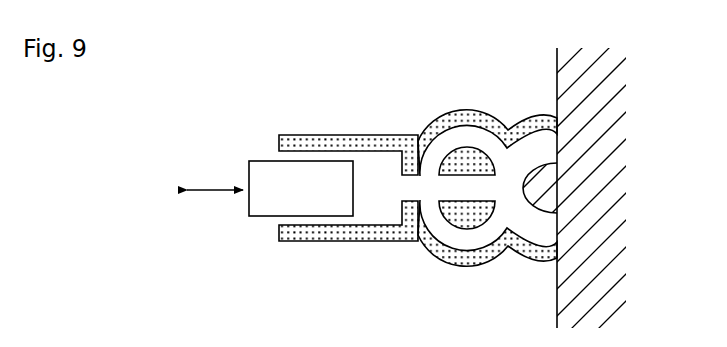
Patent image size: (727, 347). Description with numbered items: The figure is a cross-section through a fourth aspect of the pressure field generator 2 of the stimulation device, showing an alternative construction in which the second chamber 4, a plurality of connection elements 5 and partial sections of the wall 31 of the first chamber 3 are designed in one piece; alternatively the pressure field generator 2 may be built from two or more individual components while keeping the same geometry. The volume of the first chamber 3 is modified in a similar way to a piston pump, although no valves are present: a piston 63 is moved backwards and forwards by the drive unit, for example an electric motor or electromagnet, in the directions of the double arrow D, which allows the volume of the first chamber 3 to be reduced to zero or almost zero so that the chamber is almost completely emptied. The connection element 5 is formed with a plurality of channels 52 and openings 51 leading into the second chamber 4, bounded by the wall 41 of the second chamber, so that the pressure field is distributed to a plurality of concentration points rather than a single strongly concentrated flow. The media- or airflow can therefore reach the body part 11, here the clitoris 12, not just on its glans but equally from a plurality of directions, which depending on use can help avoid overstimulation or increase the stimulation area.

The pressure field generator 2 is at (237, 247).
The first chamber 3 is at (378, 188).
The wall of first chamber 31 is at (297, 145).
The piston 63 is at (263, 208).
The connection element 5 is at (462, 88).
The channel 52 is at (458, 232).
The opening of connection element to second chamber 51 is at (500, 217).
The wall of second chamber 41 is at (500, 156).
The second chamber 4 is at (542, 178).
The clitoris 12 is at (547, 215).
The body part 11 is at (600, 73).